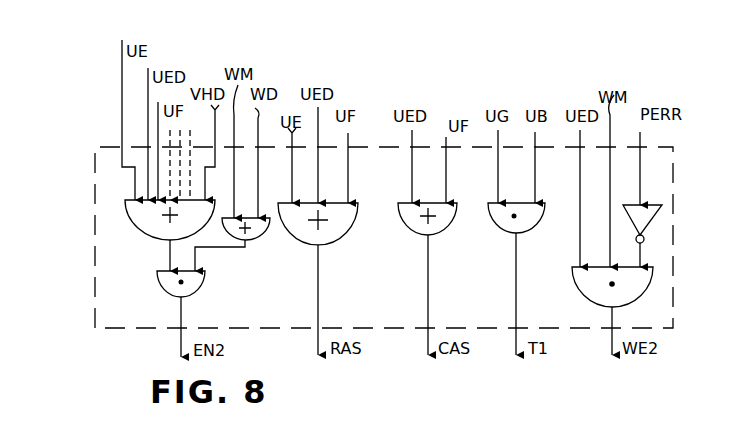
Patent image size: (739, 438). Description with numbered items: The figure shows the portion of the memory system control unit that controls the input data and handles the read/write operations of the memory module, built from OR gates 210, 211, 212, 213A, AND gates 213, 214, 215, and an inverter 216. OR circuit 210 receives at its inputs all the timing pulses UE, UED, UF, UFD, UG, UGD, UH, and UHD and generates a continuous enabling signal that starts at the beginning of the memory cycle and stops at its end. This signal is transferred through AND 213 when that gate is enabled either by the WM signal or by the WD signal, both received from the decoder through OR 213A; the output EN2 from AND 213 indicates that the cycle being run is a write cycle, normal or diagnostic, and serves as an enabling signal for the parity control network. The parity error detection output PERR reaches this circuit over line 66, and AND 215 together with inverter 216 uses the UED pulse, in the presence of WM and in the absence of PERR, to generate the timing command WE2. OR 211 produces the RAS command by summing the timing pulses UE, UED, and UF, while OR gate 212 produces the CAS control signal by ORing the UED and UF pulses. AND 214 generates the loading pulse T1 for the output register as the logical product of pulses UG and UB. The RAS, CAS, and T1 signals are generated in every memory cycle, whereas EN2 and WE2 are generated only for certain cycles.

The OR circuit 210 is at (142, 232).
The OR gate 211 is at (338, 243).
The OR gate 212 is at (405, 231).
The AND gate 213 is at (205, 281).
The OR gate 213A is at (255, 242).
The AND gate 214 is at (505, 233).
The AND gate 215 is at (578, 283).
The inverter 216 is at (655, 225).
The line 66 is at (643, 176).